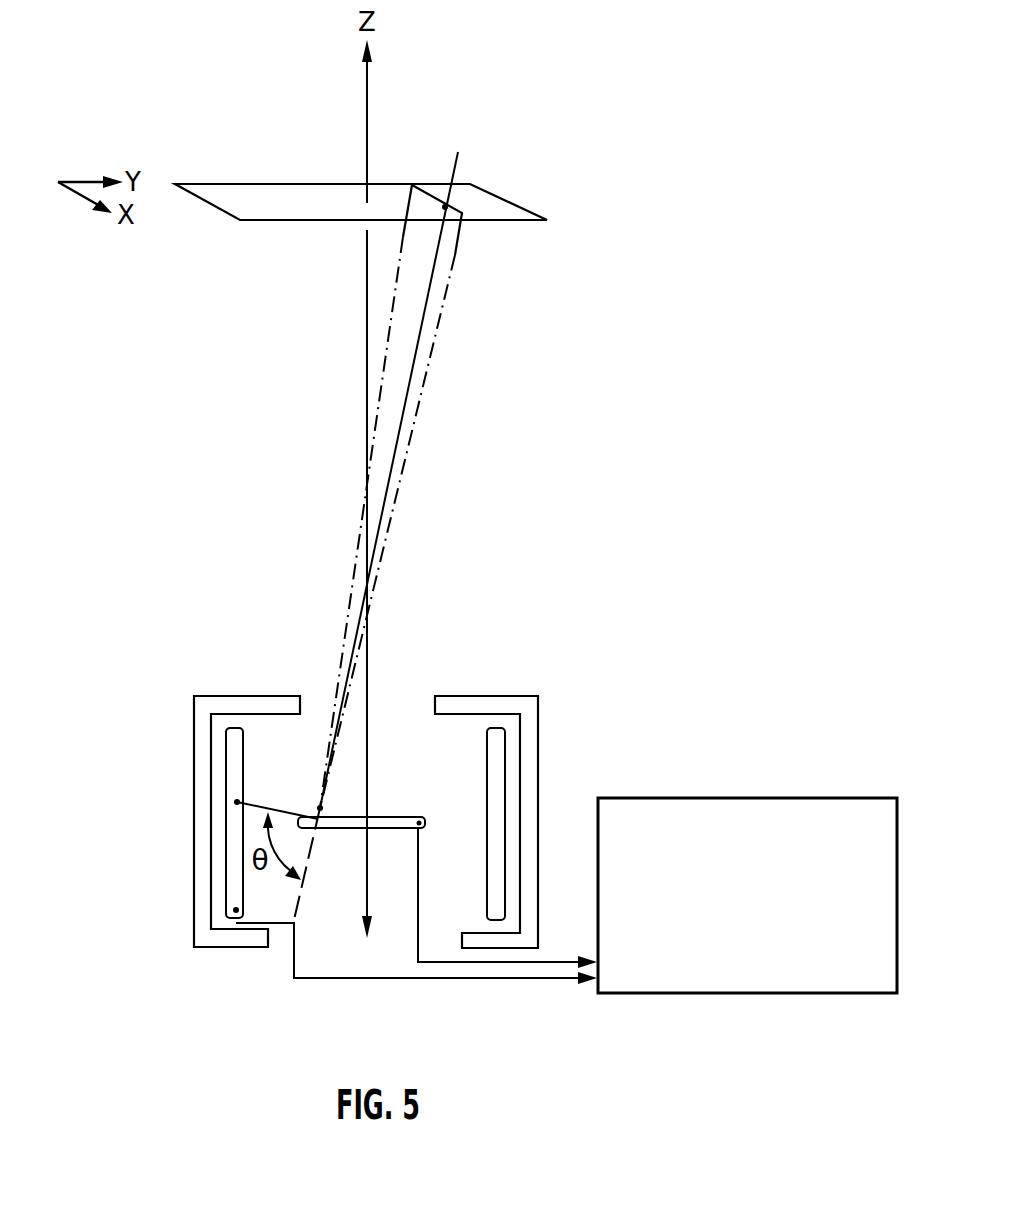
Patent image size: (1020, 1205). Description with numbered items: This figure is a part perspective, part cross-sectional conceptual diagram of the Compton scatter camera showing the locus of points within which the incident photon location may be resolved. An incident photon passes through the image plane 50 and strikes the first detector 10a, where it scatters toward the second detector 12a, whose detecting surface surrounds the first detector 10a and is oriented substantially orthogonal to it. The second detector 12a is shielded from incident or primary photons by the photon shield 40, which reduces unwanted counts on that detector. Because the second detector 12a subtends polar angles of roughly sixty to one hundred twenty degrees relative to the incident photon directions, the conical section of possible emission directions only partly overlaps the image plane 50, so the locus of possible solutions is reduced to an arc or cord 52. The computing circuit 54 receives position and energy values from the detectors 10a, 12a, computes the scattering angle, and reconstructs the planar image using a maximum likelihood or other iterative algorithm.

The image plane 50 is at (547, 220).
The arc or cord 52 is at (437, 199).
The photon shield 40 is at (194, 720).
The second detector 12a is at (224, 838).
The first detector 10a is at (393, 817).
The computing circuit 54 is at (757, 798).